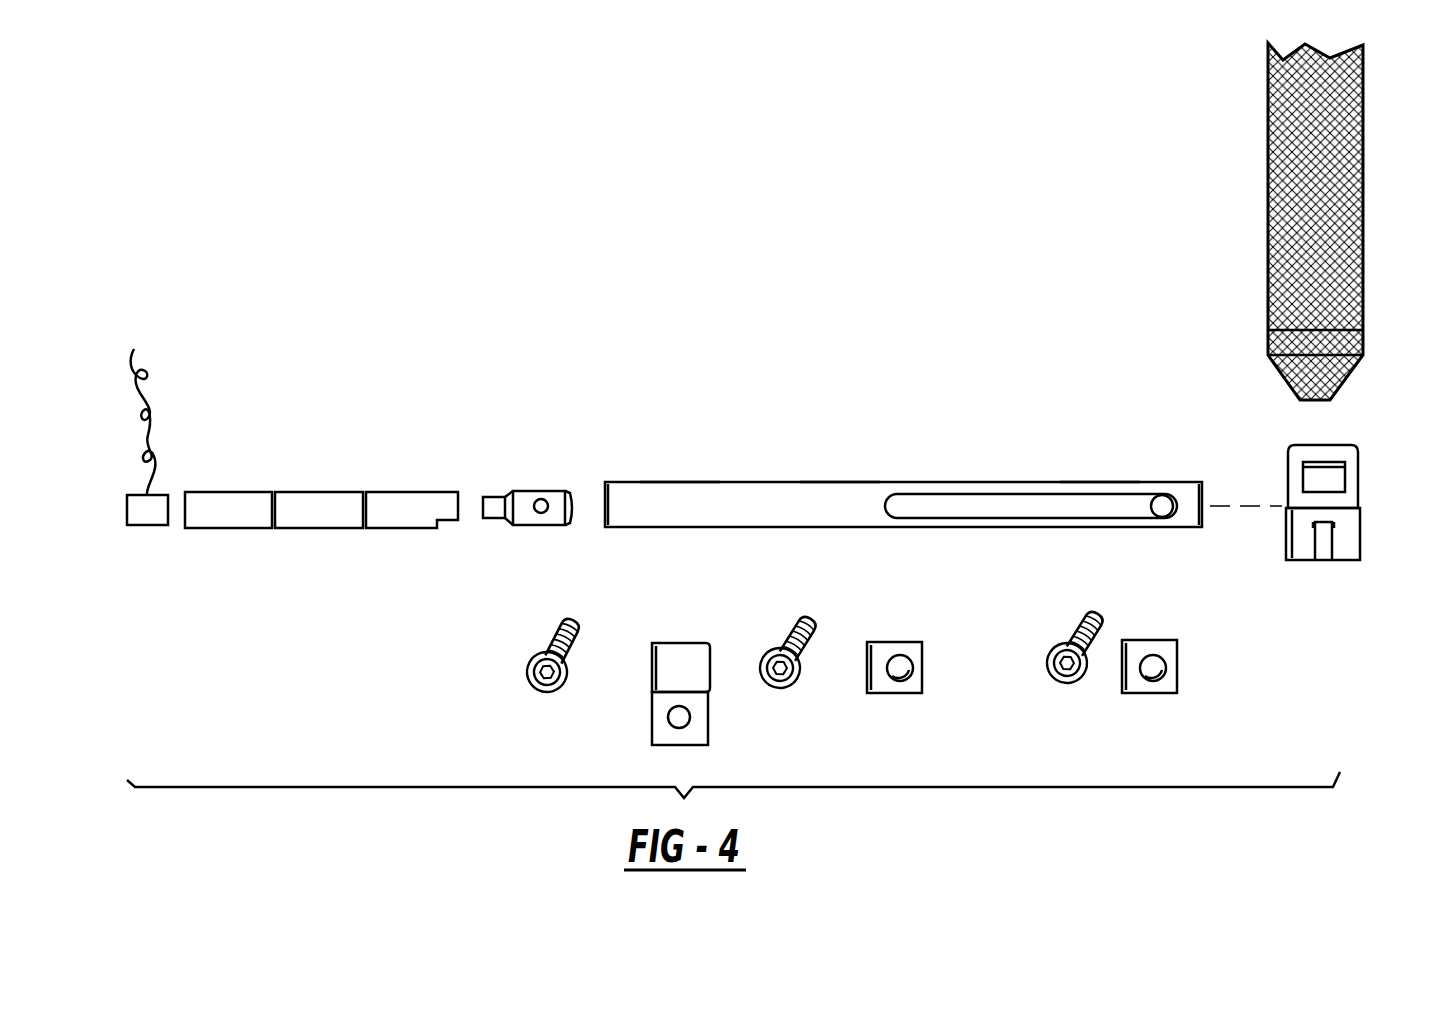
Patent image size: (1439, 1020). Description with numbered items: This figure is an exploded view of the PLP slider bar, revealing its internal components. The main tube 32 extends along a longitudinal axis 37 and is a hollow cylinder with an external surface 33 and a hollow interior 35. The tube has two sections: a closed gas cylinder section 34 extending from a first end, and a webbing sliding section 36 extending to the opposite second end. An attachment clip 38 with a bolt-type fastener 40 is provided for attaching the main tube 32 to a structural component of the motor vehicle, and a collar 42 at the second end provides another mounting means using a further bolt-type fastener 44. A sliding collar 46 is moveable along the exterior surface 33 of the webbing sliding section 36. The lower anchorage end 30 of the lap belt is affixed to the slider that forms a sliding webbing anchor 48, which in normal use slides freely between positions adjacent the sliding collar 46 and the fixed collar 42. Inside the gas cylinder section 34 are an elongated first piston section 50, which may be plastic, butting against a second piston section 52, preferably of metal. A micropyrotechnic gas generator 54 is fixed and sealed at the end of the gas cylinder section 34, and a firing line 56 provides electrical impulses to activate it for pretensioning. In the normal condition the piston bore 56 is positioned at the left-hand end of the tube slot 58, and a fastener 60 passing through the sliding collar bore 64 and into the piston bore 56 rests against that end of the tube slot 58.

The lower anchorage end 30 is at (1383, 325).
The main tube 32 is at (890, 490).
The external surface 33 is at (845, 497).
The closed gas cylinder section 34 is at (681, 495).
The hollow interior 35 is at (605, 505).
The webbing sliding section 36 is at (1101, 483).
The longitudinal axis 37 is at (1237, 505).
The attachment clip 38 is at (677, 658).
The bolt-type fastener 40 is at (553, 692).
The collar 42 is at (1155, 650).
The bolt-type fastener 44 is at (1060, 682).
The sliding collar 46 is at (916, 660).
The sliding webbing anchor 48 is at (1350, 535).
The first piston section 50 is at (320, 502).
The second piston section 52 is at (355, 466).
The micropyrotechnic gas generator 54 is at (148, 526).
The firing line 56 is at (538, 513).
The tube slot 58 is at (935, 505).
The fastener 60 is at (790, 686).
The sliding collar bore 64 is at (898, 683).